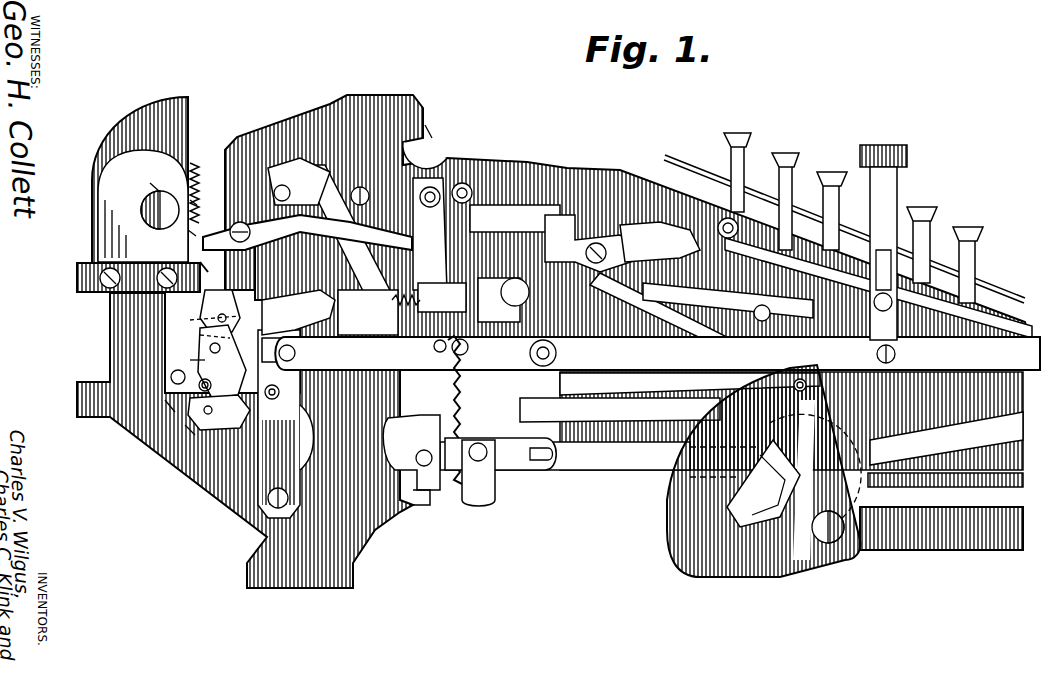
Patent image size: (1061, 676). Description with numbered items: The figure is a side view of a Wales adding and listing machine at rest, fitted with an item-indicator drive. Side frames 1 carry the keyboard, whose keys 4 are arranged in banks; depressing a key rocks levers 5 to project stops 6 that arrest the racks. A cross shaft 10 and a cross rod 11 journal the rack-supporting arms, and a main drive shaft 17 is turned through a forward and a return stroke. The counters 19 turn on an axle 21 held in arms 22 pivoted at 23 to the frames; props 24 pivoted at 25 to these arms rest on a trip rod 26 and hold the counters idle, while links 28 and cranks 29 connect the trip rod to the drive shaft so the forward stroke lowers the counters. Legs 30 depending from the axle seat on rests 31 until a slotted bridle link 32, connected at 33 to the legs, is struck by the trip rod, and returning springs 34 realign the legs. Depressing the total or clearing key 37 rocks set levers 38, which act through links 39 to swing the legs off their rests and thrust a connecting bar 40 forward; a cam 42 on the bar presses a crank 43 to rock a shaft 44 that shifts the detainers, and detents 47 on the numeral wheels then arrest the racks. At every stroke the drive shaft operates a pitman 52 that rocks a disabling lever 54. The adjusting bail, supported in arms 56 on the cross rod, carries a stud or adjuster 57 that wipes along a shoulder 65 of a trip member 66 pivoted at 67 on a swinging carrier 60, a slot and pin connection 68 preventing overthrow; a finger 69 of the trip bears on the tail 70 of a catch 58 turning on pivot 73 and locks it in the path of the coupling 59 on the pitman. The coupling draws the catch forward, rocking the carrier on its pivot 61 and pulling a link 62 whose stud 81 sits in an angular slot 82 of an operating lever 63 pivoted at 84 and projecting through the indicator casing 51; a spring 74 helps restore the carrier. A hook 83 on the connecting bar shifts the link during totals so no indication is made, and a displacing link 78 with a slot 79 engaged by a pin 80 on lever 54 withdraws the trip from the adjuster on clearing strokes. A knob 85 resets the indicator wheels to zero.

The side frames 1 is at (545, 172).
The keys 4 is at (760, 148).
The levers 5 is at (1010, 445).
The stops 6 is at (618, 327).
The cross shaft 10 is at (556, 353).
The cross rod 11 is at (368, 312).
The main drive shaft 17 is at (818, 533).
The counters 19 is at (437, 152).
The axle 21 is at (430, 234).
The arms 22 is at (416, 190).
The pivot 23 is at (357, 189).
The props 24 is at (515, 218).
The pivot 25 is at (466, 184).
The trip rod 26 is at (465, 480).
The links 28 is at (592, 470).
The cranks 29 is at (790, 430).
The legs 30 is at (429, 297).
The rests or steps 31 is at (415, 505).
The bridle links 32 is at (510, 445).
The connection 33 is at (418, 452).
The returning springs 34 is at (438, 410).
The total or clearing key 37 is at (900, 184).
The set levers 38 is at (657, 353).
The links 39 is at (500, 320).
The connecting bar 40 is at (560, 246).
The cam 42 is at (660, 242).
The crank 43 is at (718, 228).
The shaft 44 is at (745, 180).
The detents 47 is at (432, 135).
The indicator casing 51 is at (150, 183).
The pitman 52 is at (444, 350).
The disabling levers 54 is at (279, 424).
The arms 56 is at (232, 418).
The stud or adjuster 57 is at (172, 380).
The shiftable catch 58 is at (268, 330).
The hook or coupling 59 is at (292, 342).
The swinging carrier 60 is at (110, 297).
The pivot 61 is at (350, 270).
The link 62 is at (200, 262).
The operating lever 63 is at (190, 200).
The shoulder 65 is at (170, 410).
The trip member 66 is at (190, 362).
The pivot 67 is at (190, 430).
The slot and pin connection 68 is at (200, 338).
The finger 69 is at (215, 348).
The tail 70 is at (220, 304).
The pivotal point 73 is at (192, 322).
The spring 74 is at (195, 170).
The displacing link 78 is at (212, 440).
The slot 79 is at (304, 437).
The pin 80 is at (268, 384).
The stud 81 is at (188, 230).
The angular slot 82 is at (235, 205).
The hook 83 is at (307, 232).
The pivot 84 is at (299, 181).
The knob 85 is at (142, 208).